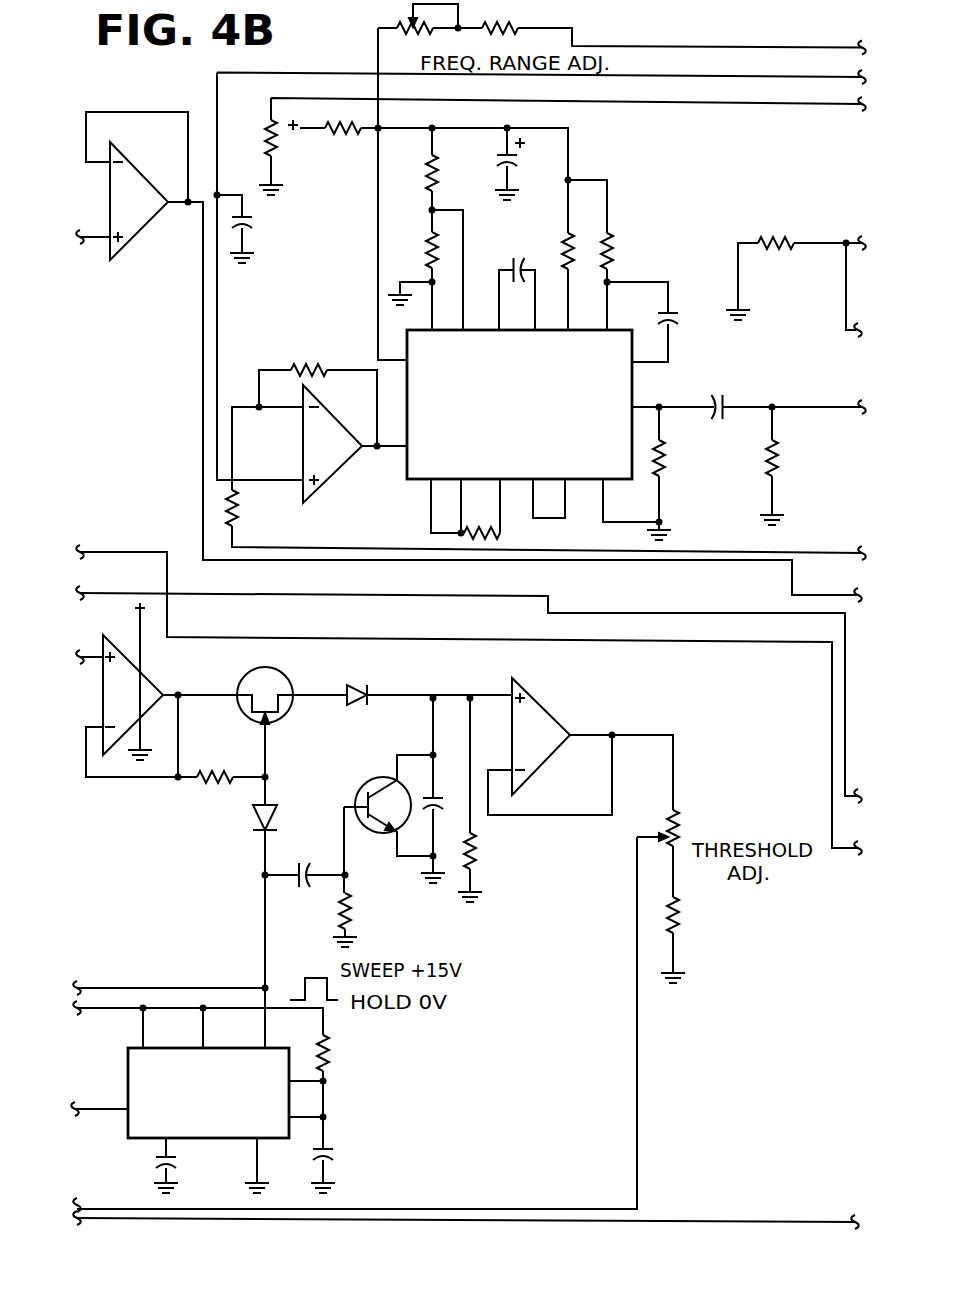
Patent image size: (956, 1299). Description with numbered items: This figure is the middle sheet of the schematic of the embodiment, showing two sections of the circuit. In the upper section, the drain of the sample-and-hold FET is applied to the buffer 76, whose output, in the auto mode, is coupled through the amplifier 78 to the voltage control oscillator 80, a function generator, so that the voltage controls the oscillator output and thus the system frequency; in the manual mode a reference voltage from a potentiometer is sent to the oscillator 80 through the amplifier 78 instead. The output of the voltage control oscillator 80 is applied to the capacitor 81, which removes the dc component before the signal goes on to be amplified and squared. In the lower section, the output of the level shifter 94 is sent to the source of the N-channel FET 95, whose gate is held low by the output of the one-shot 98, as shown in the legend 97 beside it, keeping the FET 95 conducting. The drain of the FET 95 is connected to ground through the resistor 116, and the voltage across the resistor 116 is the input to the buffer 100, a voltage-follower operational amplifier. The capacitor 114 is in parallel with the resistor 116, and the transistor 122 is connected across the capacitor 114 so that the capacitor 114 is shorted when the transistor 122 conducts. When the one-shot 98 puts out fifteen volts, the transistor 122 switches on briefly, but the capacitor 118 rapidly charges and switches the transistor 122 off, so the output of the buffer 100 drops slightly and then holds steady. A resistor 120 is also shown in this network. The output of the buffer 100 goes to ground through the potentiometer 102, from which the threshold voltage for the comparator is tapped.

The buffer 76 is at (133, 226).
The amplifier 78 is at (332, 430).
The voltage control oscillator 80 is at (535, 415).
The capacitor 81 is at (722, 394).
The level shifter 94 is at (137, 693).
The N-channel FET 95 is at (270, 681).
The legend 97 is at (337, 1010).
The one-shot 98 is at (217, 1098).
The buffer 100 is at (547, 720).
The potentiometer 102 is at (685, 837).
The capacitor 114 is at (442, 808).
The resistor 116 is at (481, 851).
The capacitor 118 is at (320, 853).
The resistor 120 is at (350, 912).
The transistor 122 is at (377, 779).